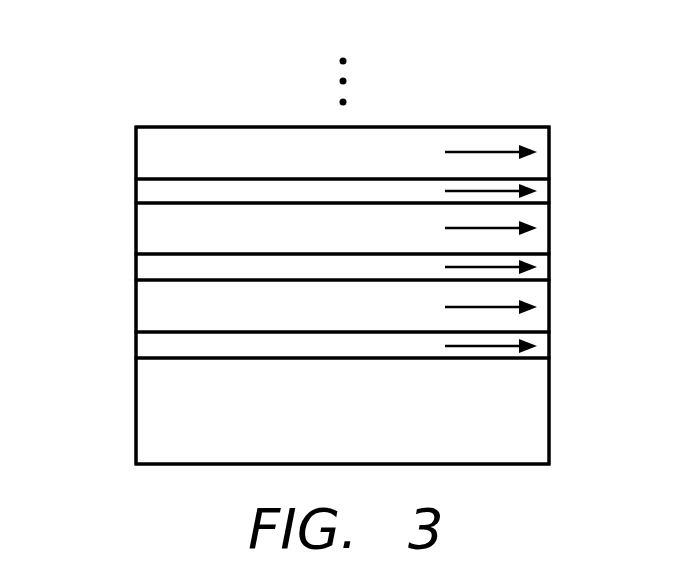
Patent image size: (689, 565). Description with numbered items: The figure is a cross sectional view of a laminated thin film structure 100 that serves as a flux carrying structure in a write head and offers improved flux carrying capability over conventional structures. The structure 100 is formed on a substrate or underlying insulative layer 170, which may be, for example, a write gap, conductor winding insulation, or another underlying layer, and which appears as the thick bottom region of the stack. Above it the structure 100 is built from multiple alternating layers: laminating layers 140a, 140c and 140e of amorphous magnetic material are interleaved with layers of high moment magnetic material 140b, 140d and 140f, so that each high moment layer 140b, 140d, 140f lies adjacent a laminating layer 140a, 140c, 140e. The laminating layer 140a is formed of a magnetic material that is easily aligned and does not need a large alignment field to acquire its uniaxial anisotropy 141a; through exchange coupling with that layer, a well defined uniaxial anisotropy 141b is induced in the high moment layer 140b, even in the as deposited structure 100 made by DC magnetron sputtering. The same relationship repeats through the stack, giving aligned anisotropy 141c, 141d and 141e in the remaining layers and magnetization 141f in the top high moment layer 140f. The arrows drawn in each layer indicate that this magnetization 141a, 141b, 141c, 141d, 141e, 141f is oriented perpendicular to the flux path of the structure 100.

The laminated thin film structure 100 is at (192, 88).
The laminating layer 140a is at (155, 349).
The high moment magnetic layer 140b is at (155, 310).
The laminating layer 140c is at (155, 271).
The high moment magnetic layer 140d is at (155, 232).
The laminating layer 140e is at (155, 194).
The high moment magnetic layer 140f is at (155, 156).
The uniaxial anisotropy 141a is at (536, 344).
The uniaxial anisotropy 141b is at (508, 305).
The aligned anisotropy 141c is at (536, 268).
The aligned anisotropy 141d is at (508, 226).
The aligned anisotropy 141e is at (536, 190).
The magnetization 141f is at (508, 149).
The substrate or underlying insulative layer 170 is at (155, 428).